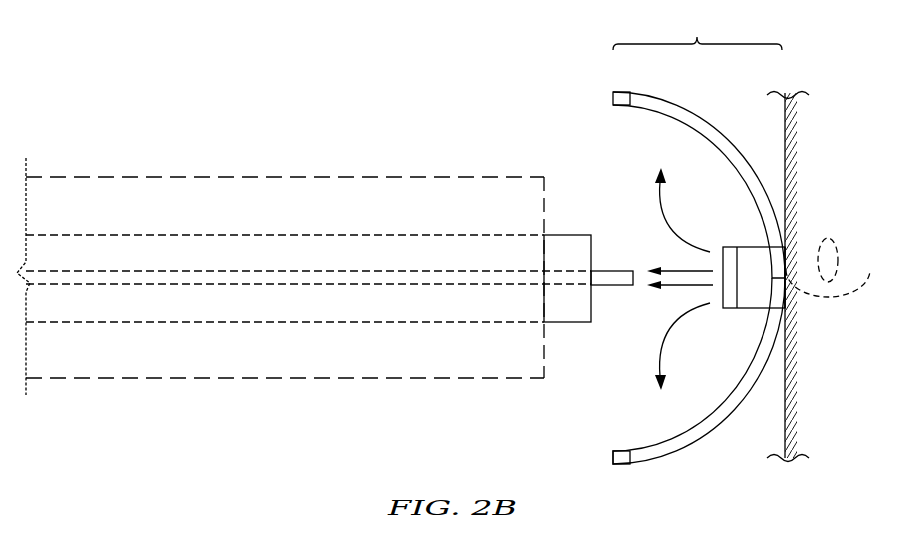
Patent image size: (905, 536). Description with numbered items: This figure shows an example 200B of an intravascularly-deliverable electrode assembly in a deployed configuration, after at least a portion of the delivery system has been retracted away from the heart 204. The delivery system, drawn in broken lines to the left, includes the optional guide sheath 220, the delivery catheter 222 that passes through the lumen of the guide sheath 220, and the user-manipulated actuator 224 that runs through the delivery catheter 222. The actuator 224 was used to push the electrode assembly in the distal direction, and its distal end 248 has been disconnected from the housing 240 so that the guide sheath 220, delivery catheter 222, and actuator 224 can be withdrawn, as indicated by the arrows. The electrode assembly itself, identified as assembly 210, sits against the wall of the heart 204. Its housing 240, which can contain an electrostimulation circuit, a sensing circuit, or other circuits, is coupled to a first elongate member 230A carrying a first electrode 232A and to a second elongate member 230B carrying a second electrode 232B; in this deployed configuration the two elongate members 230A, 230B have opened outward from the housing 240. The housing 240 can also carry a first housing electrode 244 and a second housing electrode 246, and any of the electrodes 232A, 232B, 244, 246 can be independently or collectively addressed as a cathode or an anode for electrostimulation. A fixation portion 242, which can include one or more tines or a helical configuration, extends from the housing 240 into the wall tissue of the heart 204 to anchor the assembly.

The example 200B is at (118, 48).
The heart 204 is at (790, 143).
The shield assembly 210 is at (671, 245).
The guide sheath 220 is at (285, 176).
The delivery catheter 222 is at (309, 234).
The actuator 224 is at (330, 270).
The first elongate member 230A is at (687, 103).
The second elongate member 230B is at (685, 453).
The first electrode 232A is at (613, 91).
The second electrode 232B is at (618, 450).
The housing 240 is at (753, 260).
The fixation portion 242 is at (838, 257).
The first housing electrode 244 is at (733, 297).
The second housing electrode 246 is at (790, 298).
The distal end 248 is at (627, 269).